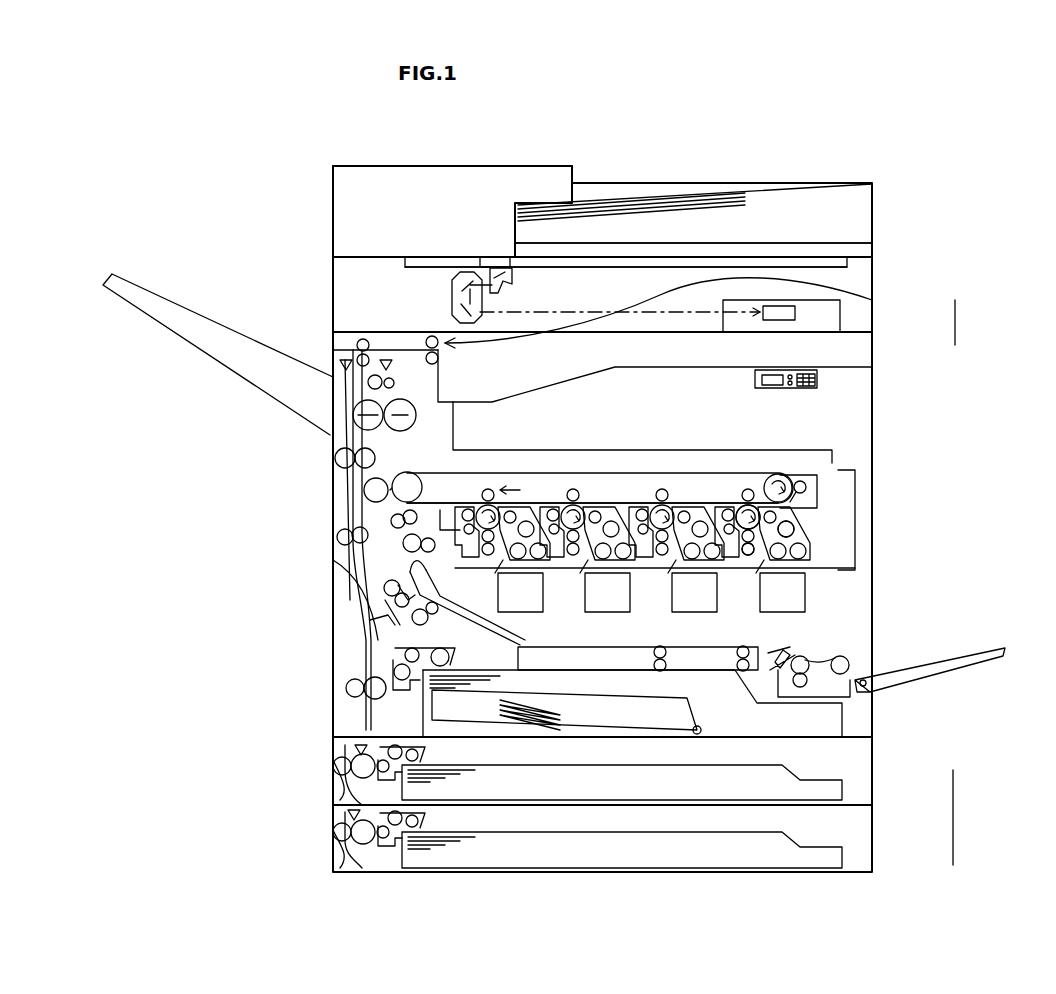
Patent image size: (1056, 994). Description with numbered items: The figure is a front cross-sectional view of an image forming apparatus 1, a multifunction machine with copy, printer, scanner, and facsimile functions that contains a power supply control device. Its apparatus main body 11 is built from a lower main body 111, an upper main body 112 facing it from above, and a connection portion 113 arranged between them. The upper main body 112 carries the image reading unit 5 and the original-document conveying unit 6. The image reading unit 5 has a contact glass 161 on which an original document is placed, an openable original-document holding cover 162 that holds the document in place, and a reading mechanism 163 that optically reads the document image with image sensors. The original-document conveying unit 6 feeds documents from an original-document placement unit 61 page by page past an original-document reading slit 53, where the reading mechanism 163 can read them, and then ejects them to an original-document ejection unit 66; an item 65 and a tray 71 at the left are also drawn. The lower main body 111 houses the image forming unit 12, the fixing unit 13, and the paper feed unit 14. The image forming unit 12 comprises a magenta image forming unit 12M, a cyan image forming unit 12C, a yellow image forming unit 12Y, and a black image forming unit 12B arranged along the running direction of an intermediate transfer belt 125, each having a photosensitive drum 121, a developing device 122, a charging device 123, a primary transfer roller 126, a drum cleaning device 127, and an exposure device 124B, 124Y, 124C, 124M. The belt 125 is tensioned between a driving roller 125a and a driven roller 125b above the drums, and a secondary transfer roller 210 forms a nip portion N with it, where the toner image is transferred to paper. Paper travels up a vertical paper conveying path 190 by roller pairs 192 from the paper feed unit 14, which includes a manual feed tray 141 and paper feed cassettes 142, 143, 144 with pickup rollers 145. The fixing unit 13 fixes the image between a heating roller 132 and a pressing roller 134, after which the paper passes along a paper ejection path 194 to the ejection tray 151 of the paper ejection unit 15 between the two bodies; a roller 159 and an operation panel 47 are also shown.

The image forming apparatus 1 is at (954, 243).
The image reading unit 5 is at (318, 291).
The original-document conveying unit 6 is at (728, 163).
The apparatus main body 11 is at (993, 292).
The image forming unit 12 is at (856, 474).
The fixing unit 13 is at (243, 425).
The paper feed unit 14 is at (985, 770).
The paper ejection unit 15 is at (840, 359).
The operation panel 47 is at (820, 380).
The original-document reading slit 53 is at (492, 257).
The original-document placement unit 61 is at (782, 188).
The document output tray 65 is at (432, 215).
The original-document ejection unit 66 is at (788, 245).
The sheet output tray 71 is at (184, 378).
The lower main body 111 is at (887, 346).
The upper main body 112 is at (887, 292).
The connection portion 113 is at (875, 313).
The black image forming unit 12B is at (506, 478).
The yellow image forming unit 12Y is at (583, 478).
The cyan image forming unit 12C is at (672, 478).
The magenta image forming unit 12M is at (756, 473).
The photosensitive drum 121 is at (770, 512).
The developing device 122 is at (795, 530).
The charging device 123 is at (750, 558).
The exposure device 124B is at (530, 612).
The exposure device 124Y is at (615, 612).
The exposure device 124C is at (702, 612).
The exposure device 124M is at (790, 612).
The intermediate transfer belt 125 is at (772, 482).
The driving roller 125a is at (438, 455).
The driven roller 125b is at (805, 480).
The primary transfer roller 126 is at (760, 470).
The drum cleaning device 127 is at (725, 498).
The heating roller 132 is at (355, 445).
The pressing roller 134 is at (355, 430).
The manual feed tray 141 is at (960, 665).
The paper feed cassette 142 is at (842, 790).
The paper feed cassette 143 is at (843, 723).
The paper feed cassette 144 is at (842, 855).
The pickup roller 145 is at (388, 812).
The ejection tray 151 is at (476, 402).
The roller 159 is at (420, 350).
The contact glass 161 is at (738, 262).
The original-document holding cover 162 is at (665, 250).
The reading mechanism 163 is at (440, 302).
The paper conveying path 190 is at (352, 480).
The roller pair 192 is at (418, 597).
The paper ejection path 194 is at (420, 345).
The secondary transfer roller 210 is at (352, 520).
The nip portion N is at (365, 490).